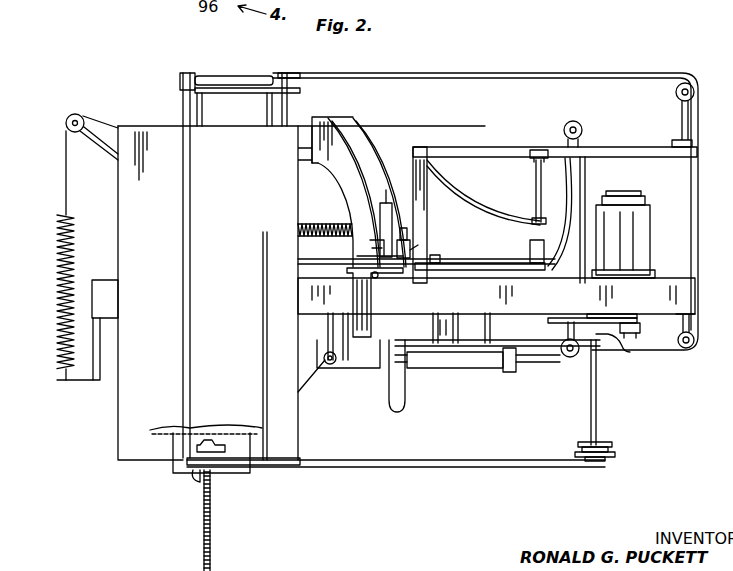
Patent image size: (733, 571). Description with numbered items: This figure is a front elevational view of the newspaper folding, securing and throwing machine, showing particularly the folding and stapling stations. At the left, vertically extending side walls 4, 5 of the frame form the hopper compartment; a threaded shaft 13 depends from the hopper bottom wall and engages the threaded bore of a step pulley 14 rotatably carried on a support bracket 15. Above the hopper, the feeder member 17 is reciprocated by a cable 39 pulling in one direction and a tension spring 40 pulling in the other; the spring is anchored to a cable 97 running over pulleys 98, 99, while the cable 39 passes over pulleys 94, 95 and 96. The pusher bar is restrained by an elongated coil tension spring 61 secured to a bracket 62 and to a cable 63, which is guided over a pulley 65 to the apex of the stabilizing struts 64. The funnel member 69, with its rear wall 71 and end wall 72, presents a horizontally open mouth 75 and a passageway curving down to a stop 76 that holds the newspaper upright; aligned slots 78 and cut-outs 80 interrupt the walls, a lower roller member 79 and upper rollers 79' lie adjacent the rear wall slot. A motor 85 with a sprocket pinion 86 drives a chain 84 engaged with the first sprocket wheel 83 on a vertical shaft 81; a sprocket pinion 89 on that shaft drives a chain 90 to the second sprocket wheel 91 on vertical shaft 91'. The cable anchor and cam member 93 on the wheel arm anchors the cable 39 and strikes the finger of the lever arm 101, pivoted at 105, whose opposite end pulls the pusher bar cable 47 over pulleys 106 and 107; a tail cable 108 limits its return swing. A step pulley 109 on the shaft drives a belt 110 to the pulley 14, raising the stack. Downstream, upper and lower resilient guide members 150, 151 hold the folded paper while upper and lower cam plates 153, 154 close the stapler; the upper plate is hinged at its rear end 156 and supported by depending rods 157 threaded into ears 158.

The side wall 4 is at (272, 257).
The side wall 5 is at (130, 229).
The threaded shaft 13 is at (211, 548).
The step pulley 14 is at (172, 460).
The support bracket 15 is at (240, 470).
The feeder member 17 is at (222, 75).
The cable 39 is at (189, 226).
The tension spring 40 is at (248, 75).
The cable 47 is at (506, 122).
The coil tension spring 61 is at (57, 266).
The bracket 62 is at (96, 385).
The cable 63 is at (71, 180).
The stabilizing struts 64 is at (117, 125).
The pulley 65 is at (66, 126).
The funnel member 69 is at (352, 127).
The rear wall 71 is at (380, 160).
The end wall 72 is at (344, 160).
The mouth 75 is at (306, 141).
The stop 76 is at (385, 292).
The slots 78 is at (352, 242).
The lower roller member 79 is at (375, 302).
The upper rollers 79' is at (405, 239).
The cut-outs 80 is at (386, 198).
The shaft 81 is at (598, 394).
The first sprocket wheel 83 is at (570, 317).
The chain 84 is at (600, 314).
The motor 85 is at (632, 205).
The sprocket pinion 86 is at (636, 328).
The sprocket pinion 89 is at (627, 350).
The chain 90 is at (565, 352).
The second sprocket wheel 91 is at (497, 329).
The vertical shaft 91' is at (437, 310).
The cable anchor and cam member 93 is at (512, 348).
The pulley 94 is at (332, 366).
The pulley 95 is at (190, 480).
The pulley 96 is at (184, 75).
The cable 97 is at (468, 74).
The pulley 98 is at (288, 72).
The pulley 99 is at (693, 84).
The lever arm 101 is at (470, 370).
The pivot 105 is at (468, 318).
The pulley 106 is at (571, 358).
The pulley 107 is at (576, 122).
The tail cable 108 is at (404, 400).
The step pulley 109 is at (608, 440).
The drive belt 110 is at (466, 460).
The upper resilient guide member 150 is at (568, 183).
The lower resilient guide member 151 is at (510, 258).
The upper cam plate 153 is at (468, 195).
The lower cam plate 154 is at (512, 272).
The rear end 156 is at (455, 145).
The depending rods 157 is at (535, 191).
The ears 158 is at (534, 150).